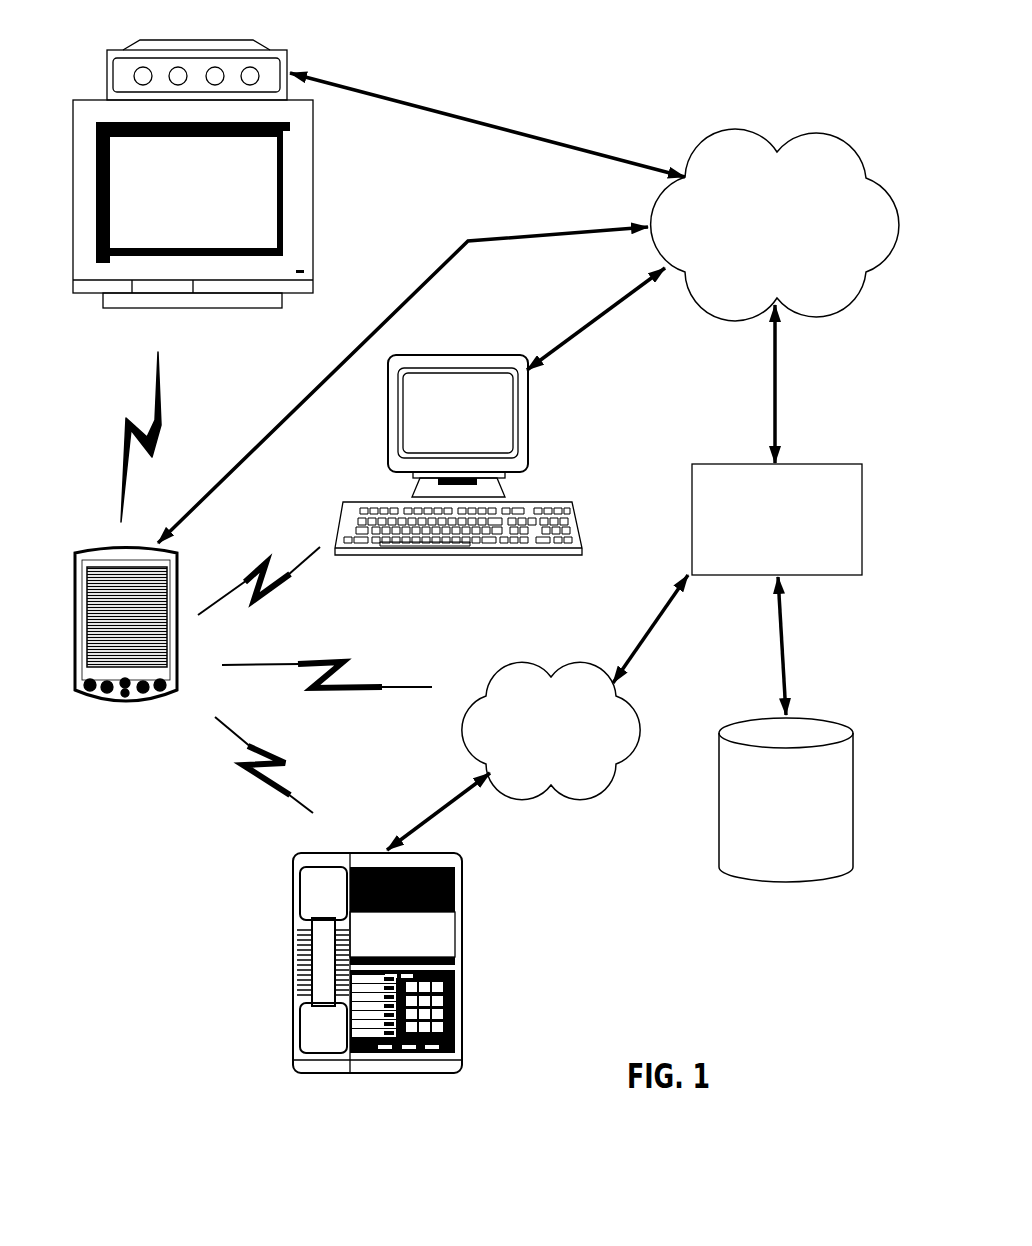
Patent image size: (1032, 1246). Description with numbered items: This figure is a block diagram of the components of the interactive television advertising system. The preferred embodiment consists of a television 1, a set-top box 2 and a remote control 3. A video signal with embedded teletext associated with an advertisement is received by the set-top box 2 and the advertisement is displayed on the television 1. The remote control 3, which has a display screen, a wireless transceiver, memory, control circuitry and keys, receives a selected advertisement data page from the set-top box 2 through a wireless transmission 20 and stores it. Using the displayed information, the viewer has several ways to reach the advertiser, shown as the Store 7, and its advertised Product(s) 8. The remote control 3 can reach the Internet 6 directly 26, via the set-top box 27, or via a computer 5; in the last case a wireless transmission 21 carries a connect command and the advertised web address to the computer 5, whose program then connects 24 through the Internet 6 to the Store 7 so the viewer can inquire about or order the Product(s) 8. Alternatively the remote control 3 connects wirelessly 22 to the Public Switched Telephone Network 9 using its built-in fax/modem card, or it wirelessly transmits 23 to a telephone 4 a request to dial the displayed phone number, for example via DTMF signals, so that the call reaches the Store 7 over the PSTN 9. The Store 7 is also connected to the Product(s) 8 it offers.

The television 1 is at (270, 159).
The set-top box 2 is at (214, 60).
The remote control 3 is at (93, 695).
The telephone 4 is at (419, 1053).
The computer 5 is at (548, 537).
The Internet 6 is at (763, 165).
The Store 7 is at (847, 510).
The Product(s) 8 is at (819, 838).
The Public Switched Telephone Network (PSTN) 9 is at (577, 782).
The wireless transmission from set-top box to remote control 20 is at (123, 467).
The wireless transmission to computer 21 is at (288, 577).
The wireless connection to PSTN 22 is at (343, 690).
The wireless transmission to telephone 23 is at (272, 787).
The computer's Internet connection 24 is at (579, 327).
The direct connection to the Internet 26 is at (572, 232).
The connection via the set-top box 27 is at (572, 147).